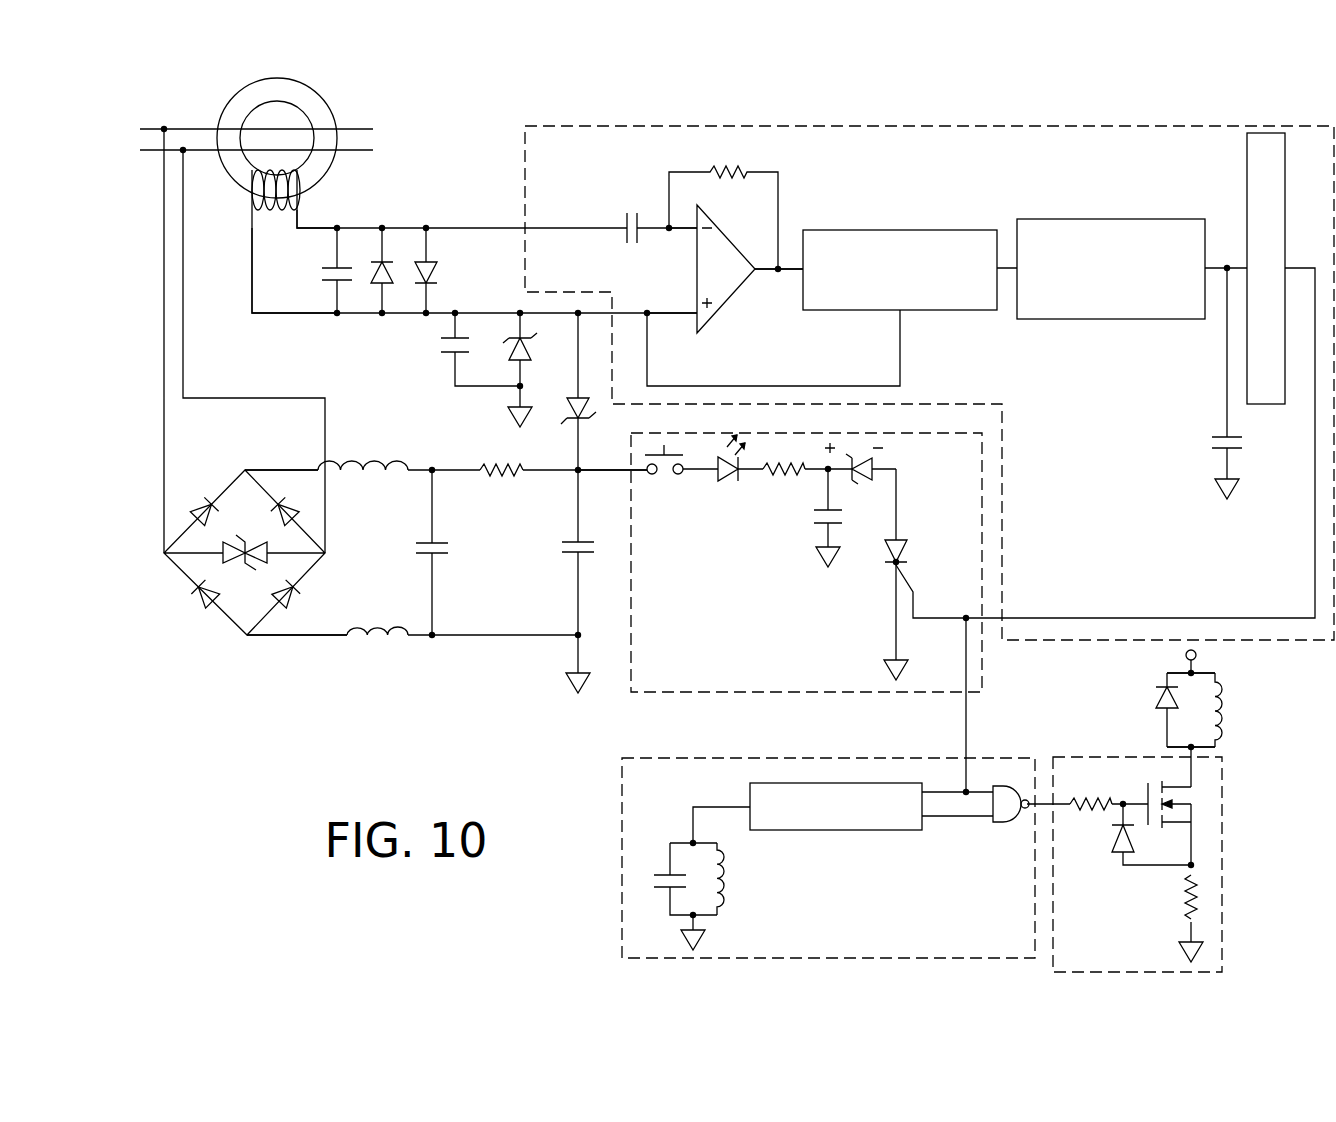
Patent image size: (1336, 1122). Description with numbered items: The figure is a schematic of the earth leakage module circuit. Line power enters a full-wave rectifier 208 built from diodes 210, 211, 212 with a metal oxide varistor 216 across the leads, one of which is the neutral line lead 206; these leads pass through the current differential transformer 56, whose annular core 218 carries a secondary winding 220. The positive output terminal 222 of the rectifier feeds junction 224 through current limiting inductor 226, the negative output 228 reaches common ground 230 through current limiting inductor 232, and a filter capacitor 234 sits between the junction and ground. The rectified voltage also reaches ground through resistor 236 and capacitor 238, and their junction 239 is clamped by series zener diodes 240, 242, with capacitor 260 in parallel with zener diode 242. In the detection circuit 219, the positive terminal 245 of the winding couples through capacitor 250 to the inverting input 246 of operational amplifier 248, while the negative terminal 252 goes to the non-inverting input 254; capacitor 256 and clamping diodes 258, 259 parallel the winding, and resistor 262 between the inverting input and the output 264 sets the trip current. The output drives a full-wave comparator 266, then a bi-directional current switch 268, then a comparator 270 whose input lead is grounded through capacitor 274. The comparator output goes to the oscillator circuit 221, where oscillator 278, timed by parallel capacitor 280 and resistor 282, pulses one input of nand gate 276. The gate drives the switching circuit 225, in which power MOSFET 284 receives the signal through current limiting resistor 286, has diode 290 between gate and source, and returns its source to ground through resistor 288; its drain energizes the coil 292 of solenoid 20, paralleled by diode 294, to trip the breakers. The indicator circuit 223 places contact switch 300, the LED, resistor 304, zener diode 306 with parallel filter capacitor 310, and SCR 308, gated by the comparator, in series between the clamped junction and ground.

The current differential transformer 56 is at (202, 110).
The annular core 218 is at (320, 112).
The secondary winding 220 is at (252, 176).
The positive terminal 245 is at (300, 216).
The negative terminal 252 is at (250, 293).
The capacitor 256 is at (331, 270).
The clamping diode 258 is at (388, 270).
The clamping diode 259 is at (439, 269).
The capacitor 260 is at (443, 343).
The zener diode 242 is at (518, 365).
The zener diode 240 is at (572, 403).
The capacitor 250 is at (623, 227).
The inverting input 246 is at (690, 232).
The operational amplifier 248 is at (737, 248).
The resistor 262 is at (738, 170).
The non-inverting input 254 is at (679, 339).
The output 264 is at (790, 265).
The full-wave comparator 266 is at (869, 230).
The bi-directional current switch 268 is at (1068, 218).
The comparator 270 is at (1245, 188).
The capacitor 274 is at (1223, 436).
The detection circuit 219 is at (1050, 125).
The full-wave rectifier 208 is at (203, 615).
The diode 211 is at (208, 501).
The diode 212 is at (293, 506).
The diode 210 is at (203, 597).
The metal oxide varistor 216 is at (268, 553).
The positive output terminal 222 is at (345, 461).
The current limiting inductor 226 is at (374, 465).
The negative output 228 is at (291, 637).
The current limiting inductor 232 is at (382, 637).
The filter capacitor 234 is at (425, 541).
The resistor 236 is at (503, 465).
The junction 239 is at (577, 472).
The capacitor 238 is at (563, 543).
The indicator circuit 223 is at (708, 694).
The contact switch 300 is at (664, 477).
The neutral line lead 206 is at (727, 481).
The resistor 304 is at (773, 472).
The filter capacitor 310 is at (815, 517).
The zener diode 306 is at (878, 465).
The SCR 308 is at (907, 546).
The common ground 230 is at (576, 684).
The oscillator circuit 221 is at (622, 835).
The oscillator 278 is at (792, 830).
The capacitor 280 is at (665, 870).
The resistor 282 is at (726, 874).
The nand gate 276 is at (1010, 828).
The switching circuit 225 is at (1225, 763).
The junction 224 is at (1198, 655).
The solenoid 20 is at (1232, 722).
The diode 294 is at (1160, 690).
The coil 292 is at (1225, 700).
The power MOSFET 284 is at (1192, 796).
The current limiting resistor 286 is at (1084, 812).
The diode 290 is at (1120, 858).
The current limiting resistor 288 is at (1200, 895).